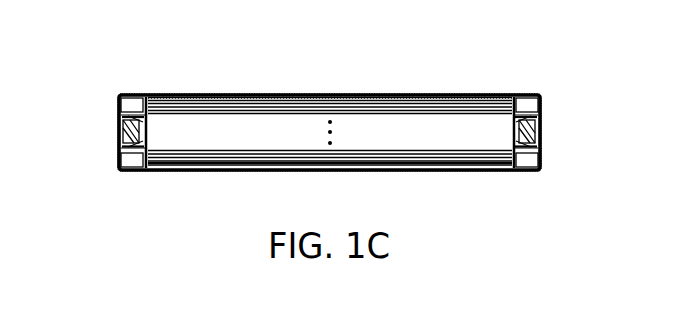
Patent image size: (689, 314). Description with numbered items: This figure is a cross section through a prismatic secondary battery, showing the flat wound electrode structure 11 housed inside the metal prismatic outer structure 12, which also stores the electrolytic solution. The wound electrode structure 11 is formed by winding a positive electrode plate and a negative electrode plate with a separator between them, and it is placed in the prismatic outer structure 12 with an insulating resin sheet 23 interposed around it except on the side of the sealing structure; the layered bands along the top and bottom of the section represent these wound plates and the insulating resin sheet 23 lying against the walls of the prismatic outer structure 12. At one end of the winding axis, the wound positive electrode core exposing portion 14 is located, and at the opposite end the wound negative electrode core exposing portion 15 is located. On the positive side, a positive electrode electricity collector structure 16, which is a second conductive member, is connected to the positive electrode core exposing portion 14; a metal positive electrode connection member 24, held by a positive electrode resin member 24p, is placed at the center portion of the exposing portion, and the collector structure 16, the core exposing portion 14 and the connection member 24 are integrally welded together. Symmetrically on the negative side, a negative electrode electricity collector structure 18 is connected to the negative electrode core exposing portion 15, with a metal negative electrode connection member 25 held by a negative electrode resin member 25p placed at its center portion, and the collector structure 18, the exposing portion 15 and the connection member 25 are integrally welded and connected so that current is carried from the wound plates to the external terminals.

The wound electrode structure 11 is at (478, 143).
The prismatic outer structure 12 is at (418, 172).
The positive electrode core exposing portion 14 is at (140, 104).
The negative electrode core exposing portion 15 is at (519, 100).
The positive electrode electricity collector structure 16 is at (115, 105).
The negative electrode electricity collector structure 18 is at (540, 109).
The insulating resin sheet 23 is at (277, 93).
The positive electrode connection member 24 is at (121, 135).
The positive electrode resin member 24p is at (117, 141).
The negative electrode connection member 25 is at (538, 132).
The negative electrode resin member 25p is at (539, 141).